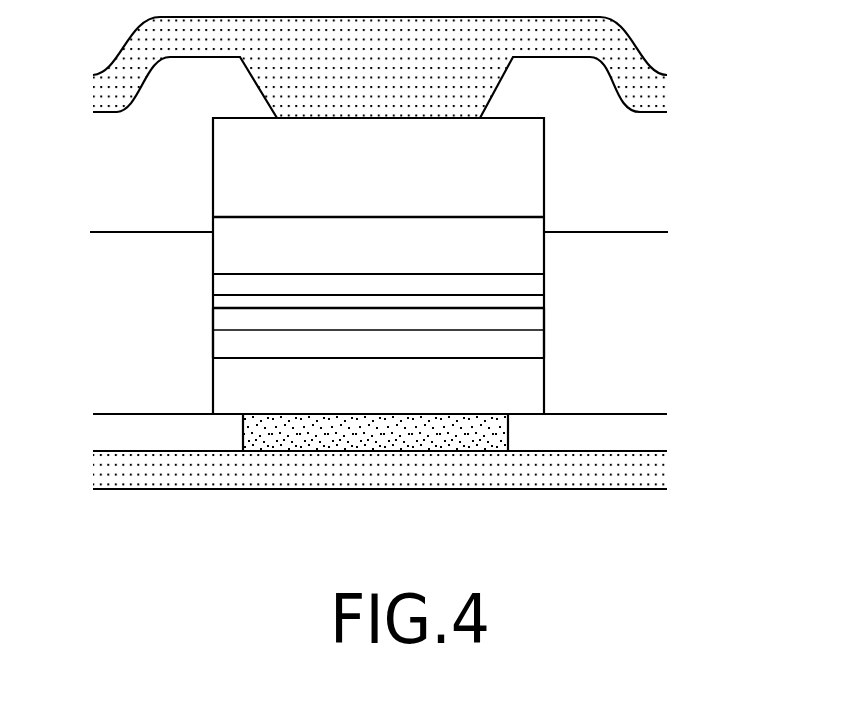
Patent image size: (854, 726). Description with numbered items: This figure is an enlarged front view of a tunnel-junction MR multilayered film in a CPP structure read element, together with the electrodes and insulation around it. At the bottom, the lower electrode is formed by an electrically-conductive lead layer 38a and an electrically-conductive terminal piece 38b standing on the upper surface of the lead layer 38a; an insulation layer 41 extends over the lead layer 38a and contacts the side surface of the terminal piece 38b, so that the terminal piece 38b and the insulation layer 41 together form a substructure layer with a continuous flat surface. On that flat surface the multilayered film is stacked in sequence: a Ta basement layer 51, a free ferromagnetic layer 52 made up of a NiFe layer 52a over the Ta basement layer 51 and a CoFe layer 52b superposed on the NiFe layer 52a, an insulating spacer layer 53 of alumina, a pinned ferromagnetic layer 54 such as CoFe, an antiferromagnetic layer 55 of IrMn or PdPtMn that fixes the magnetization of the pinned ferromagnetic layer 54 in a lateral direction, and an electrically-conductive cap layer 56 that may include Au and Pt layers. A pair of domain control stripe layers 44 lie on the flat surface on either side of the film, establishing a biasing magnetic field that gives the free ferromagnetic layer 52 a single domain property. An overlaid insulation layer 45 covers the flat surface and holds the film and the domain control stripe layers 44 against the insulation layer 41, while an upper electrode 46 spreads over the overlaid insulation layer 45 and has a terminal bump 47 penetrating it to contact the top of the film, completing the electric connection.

The lead layer 38a is at (300, 483).
The terminal piece 38b is at (428, 448).
The insulation layer 41 is at (138, 418).
The domain control stripe layers 44 is at (127, 237).
The overlaid insulation layer 45 is at (178, 67).
The upper electrode 46 is at (617, 40).
The terminal bump 47 is at (272, 82).
The Ta basement layer 51 is at (213, 393).
The free ferromagnetic layer 52 is at (635, 304).
The NiFe layer 52a is at (539, 345).
The CoFe layer 52b is at (539, 321).
The insulating spacer layer 53 is at (218, 301).
The pinned ferromagnetic layer 54 is at (538, 285).
The antiferromagnetic layer 55 is at (217, 266).
The electrically-conductive cap layer 56 is at (537, 152).